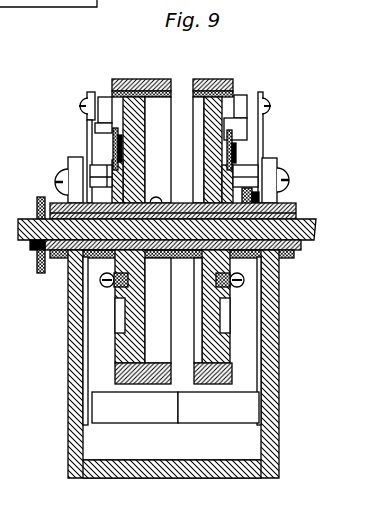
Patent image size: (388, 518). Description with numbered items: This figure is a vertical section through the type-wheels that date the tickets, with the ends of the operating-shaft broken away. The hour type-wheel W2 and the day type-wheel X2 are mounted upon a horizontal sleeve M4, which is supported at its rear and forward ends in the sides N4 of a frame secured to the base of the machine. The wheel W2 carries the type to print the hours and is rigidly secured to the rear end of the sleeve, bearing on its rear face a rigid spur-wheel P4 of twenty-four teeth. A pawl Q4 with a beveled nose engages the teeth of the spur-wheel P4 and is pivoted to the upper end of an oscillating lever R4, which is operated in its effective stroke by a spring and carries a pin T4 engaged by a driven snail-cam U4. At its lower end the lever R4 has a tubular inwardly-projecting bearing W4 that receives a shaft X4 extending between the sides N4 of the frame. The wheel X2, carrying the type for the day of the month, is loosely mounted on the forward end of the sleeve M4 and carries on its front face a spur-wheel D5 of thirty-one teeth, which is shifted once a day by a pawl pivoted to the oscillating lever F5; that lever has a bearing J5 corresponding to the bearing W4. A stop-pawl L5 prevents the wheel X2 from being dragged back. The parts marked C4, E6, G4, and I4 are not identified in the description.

The hour type-wheel W2 is at (136, 79).
The day type-wheel X2 is at (200, 73).
The pawl Q4 is at (88, 125).
The left contact strip C4 is at (113, 152).
The right bracket E6 is at (240, 123).
The oscillating lever F5 is at (263, 145).
The stop-pawl L5 is at (233, 157).
The pin T4 is at (18, 230).
The horizontal sleeve M4 is at (316, 242).
The snail-cam U4 is at (37, 272).
The frame sides N4 is at (68, 347).
The housing bottom G4 is at (172, 469).
The oscillating lever R4 is at (83, 318).
The tubular bearing W4 is at (139, 332).
The spur-wheel P4 is at (115, 312).
The shaft X4 is at (240, 283).
The spur-wheel D5 is at (230, 308).
The coil box left I4 is at (85, 410).
The bearing J5 is at (218, 407).